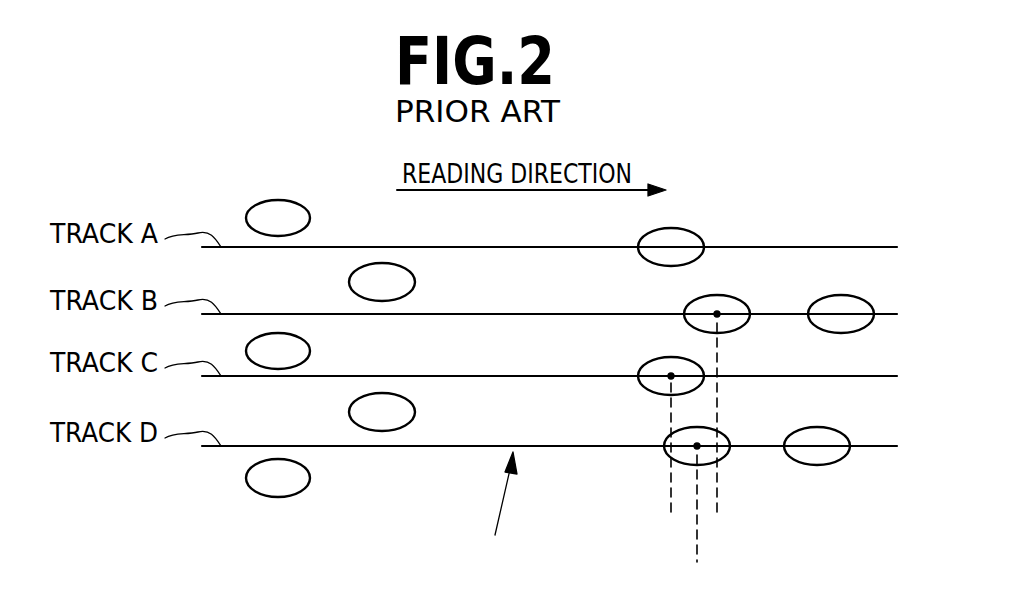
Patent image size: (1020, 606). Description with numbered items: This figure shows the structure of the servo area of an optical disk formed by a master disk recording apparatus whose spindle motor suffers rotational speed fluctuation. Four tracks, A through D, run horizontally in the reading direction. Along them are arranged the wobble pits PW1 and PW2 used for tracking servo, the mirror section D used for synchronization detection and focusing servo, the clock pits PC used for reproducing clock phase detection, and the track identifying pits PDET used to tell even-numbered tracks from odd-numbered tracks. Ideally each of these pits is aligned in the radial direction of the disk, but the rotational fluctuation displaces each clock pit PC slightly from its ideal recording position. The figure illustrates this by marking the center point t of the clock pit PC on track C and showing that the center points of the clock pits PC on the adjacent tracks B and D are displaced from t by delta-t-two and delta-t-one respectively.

The wobble pit PW1 is at (251, 493).
The wobble pit PW2 is at (372, 431).
The clock pit PC is at (627, 412).
The track identifying pit PDET is at (782, 481).
The mirror section D is at (501, 511).
The center point of clock pit on track C t is at (740, 548).